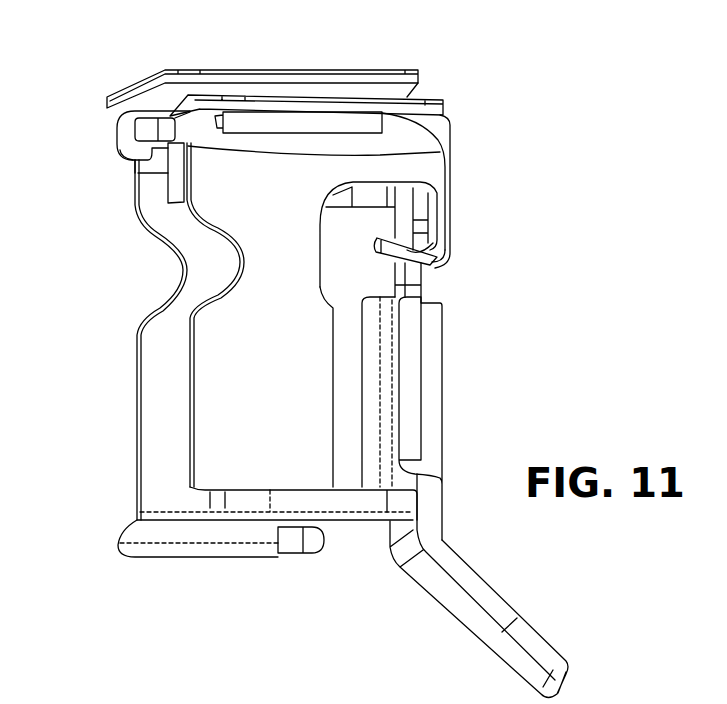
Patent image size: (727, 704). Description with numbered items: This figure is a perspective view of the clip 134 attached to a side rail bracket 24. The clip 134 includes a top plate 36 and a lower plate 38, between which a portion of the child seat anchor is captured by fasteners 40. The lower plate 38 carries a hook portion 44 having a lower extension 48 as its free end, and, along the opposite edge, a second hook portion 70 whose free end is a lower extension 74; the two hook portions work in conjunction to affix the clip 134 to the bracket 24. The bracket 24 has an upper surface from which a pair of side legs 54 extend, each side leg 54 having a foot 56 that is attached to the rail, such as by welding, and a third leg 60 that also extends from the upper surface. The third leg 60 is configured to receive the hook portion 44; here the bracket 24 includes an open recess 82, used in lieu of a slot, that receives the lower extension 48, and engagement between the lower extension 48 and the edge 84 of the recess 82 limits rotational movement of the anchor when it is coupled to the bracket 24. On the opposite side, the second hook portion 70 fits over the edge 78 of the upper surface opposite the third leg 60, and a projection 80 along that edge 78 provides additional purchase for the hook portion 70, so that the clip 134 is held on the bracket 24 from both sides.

The bracket 24 is at (441, 393).
The top plate 36 is at (342, 70).
The lower plate 38 is at (420, 107).
The fasteners 40 is at (290, 122).
The hook portion 44 is at (468, 184).
The lower extension 48 is at (432, 260).
The side legs 54 is at (210, 397).
The foot 56 is at (122, 537).
The third leg 60 is at (430, 456).
The second hook portion 70 is at (92, 124).
The lower extension 74 is at (135, 153).
The edge 78 is at (180, 122).
The projection 80 is at (148, 133).
The open recess 82 is at (466, 260).
The edge 84 is at (413, 270).
The clip 134 is at (436, 60).